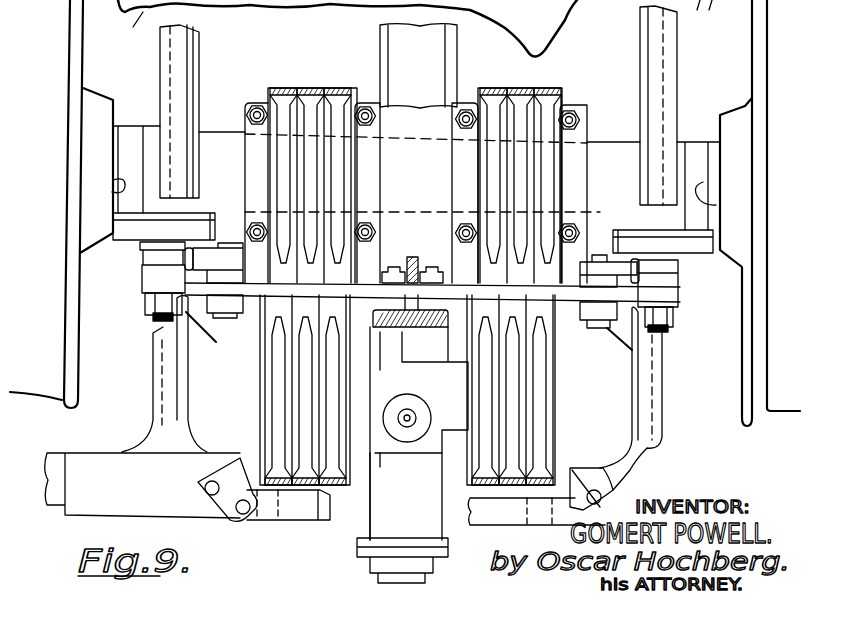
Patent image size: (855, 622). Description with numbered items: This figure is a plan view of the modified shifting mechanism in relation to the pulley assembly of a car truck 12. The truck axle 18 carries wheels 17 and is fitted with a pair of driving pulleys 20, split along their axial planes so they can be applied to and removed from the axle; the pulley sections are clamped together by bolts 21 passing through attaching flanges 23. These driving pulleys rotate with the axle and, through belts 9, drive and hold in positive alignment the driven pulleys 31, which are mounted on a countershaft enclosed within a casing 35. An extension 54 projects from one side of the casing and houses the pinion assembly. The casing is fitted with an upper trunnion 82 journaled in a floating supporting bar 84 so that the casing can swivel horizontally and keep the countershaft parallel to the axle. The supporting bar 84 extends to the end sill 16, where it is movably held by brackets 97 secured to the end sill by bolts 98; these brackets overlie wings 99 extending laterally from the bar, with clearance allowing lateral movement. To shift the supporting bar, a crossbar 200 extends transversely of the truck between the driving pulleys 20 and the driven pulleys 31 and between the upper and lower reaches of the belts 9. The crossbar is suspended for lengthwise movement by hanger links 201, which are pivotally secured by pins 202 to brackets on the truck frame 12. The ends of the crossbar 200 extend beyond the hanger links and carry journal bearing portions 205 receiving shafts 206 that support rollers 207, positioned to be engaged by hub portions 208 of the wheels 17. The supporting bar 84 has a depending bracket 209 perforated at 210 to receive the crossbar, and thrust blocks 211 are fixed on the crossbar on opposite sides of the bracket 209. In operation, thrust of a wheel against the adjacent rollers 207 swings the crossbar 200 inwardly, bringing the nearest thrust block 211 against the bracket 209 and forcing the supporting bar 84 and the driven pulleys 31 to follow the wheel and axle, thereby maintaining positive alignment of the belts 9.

The belts 9 is at (535, 283).
The truck 12 is at (150, 392).
The end sill 16 is at (47, 503).
The wheels 17 is at (86, 35).
The axle 18 is at (213, 130).
The pulleys 20 is at (587, 137).
The bolts 21 is at (580, 118).
The attaching flanges 23 is at (253, 103).
The pulleys 31 is at (545, 412).
The casing 35 is at (368, 503).
The extension 54 is at (402, 518).
The upper trunnion 82 is at (417, 408).
The supporting bar 84 is at (443, 58).
The brackets 97 is at (223, 460).
The bolts 98 is at (232, 516).
The wings 99 is at (472, 512).
The crossbar 200 is at (583, 343).
The hanger links 201 is at (225, 297).
The pins 202 is at (590, 255).
The journal bearing portions 205 is at (698, 317).
The shafts 206 is at (683, 357).
The rollers 207 is at (700, 240).
The hub portions 208 is at (703, 182).
The depending bracket 209 is at (430, 240).
The perforation 210 is at (398, 265).
The thrust blocks 211 is at (446, 265).